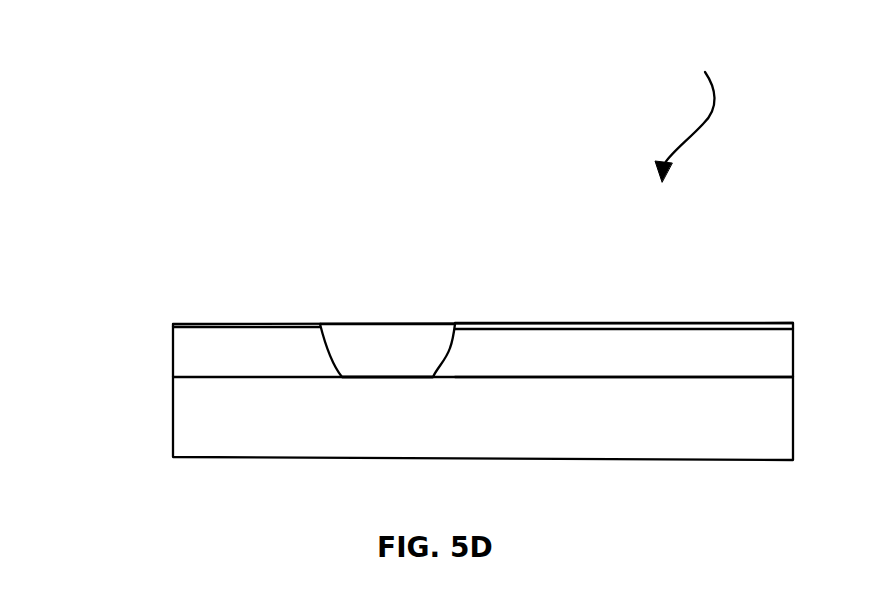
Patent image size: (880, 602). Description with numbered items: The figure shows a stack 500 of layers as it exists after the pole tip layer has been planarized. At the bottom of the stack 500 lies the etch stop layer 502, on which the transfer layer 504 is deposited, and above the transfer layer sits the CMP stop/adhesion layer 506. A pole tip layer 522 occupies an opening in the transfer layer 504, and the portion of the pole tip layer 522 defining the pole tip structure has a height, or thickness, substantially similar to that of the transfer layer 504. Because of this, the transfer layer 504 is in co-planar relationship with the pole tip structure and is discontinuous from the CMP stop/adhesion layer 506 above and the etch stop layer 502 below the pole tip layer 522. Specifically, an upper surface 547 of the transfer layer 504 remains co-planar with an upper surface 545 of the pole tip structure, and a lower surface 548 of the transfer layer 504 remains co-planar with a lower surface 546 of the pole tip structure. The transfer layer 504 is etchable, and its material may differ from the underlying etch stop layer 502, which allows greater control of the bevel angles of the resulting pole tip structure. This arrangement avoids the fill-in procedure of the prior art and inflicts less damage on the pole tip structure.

The stack 500 is at (689, 114).
The etch stop layer 502 is at (173, 410).
The transfer layer 504 is at (172, 353).
The CMP stop/adhesion layer 506 is at (172, 326).
The pole tip layer 522 is at (360, 345).
The upper surface 545 is at (393, 322).
The lower surface 546 is at (413, 378).
The upper surface 547 is at (547, 323).
The lower surface 548 is at (574, 378).